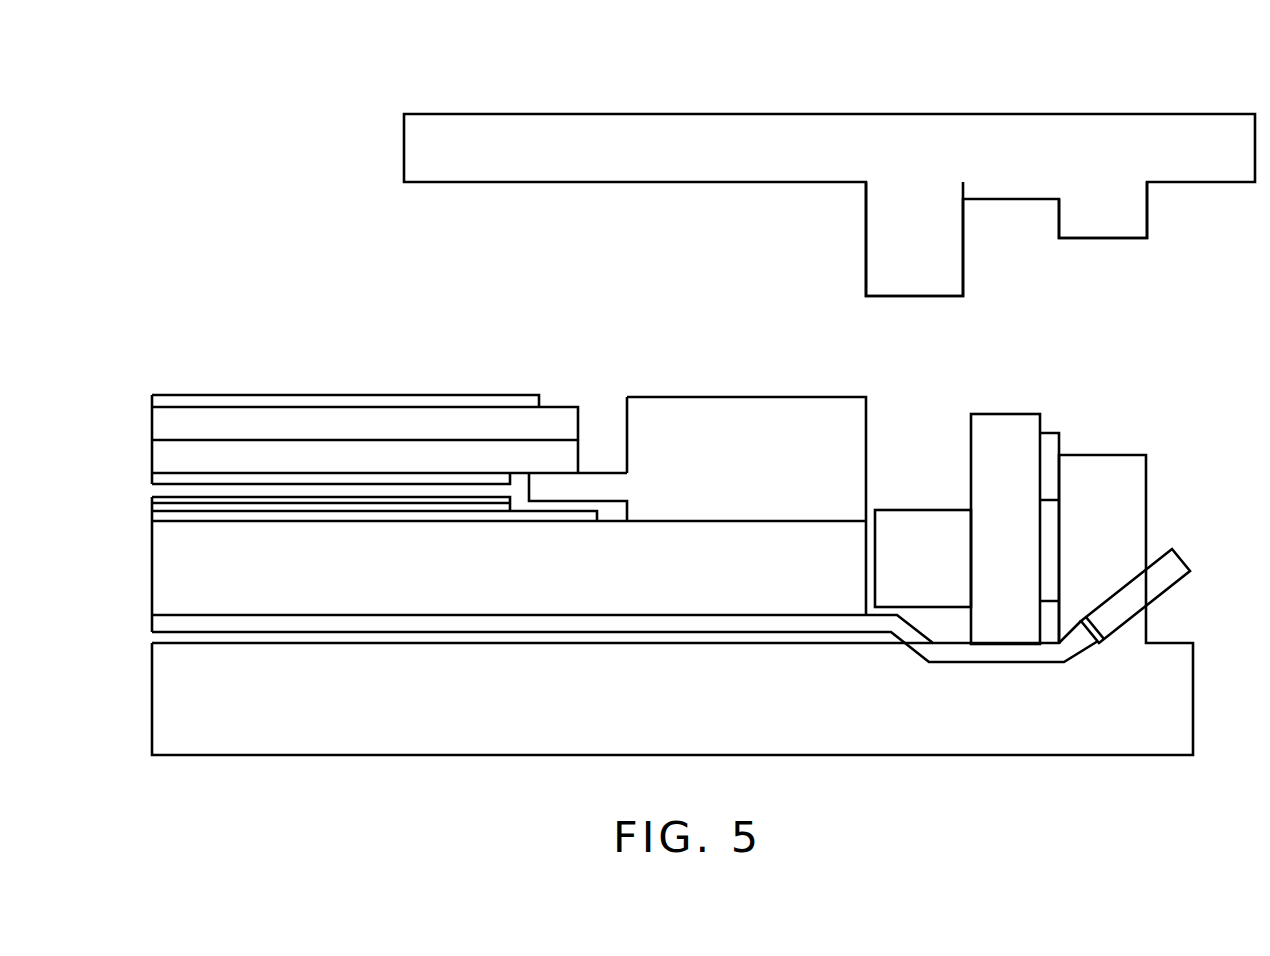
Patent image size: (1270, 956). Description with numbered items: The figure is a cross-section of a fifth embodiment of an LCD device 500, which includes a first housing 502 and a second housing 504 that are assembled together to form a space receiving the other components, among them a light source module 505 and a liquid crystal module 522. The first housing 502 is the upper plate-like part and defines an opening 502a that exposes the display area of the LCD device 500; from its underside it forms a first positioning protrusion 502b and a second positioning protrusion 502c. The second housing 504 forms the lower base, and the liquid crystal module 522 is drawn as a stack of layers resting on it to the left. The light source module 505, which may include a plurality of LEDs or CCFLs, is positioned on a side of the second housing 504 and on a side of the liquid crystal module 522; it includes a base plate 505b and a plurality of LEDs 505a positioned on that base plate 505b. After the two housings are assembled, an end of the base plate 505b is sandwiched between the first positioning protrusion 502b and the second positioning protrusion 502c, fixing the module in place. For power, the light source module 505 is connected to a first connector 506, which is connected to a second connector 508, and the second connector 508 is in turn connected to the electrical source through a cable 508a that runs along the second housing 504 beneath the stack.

The LCD device 500 is at (1136, 80).
The first housing 502 is at (830, 165).
The opening 502a is at (325, 165).
The first positioning protrusion 502b is at (882, 238).
The second positioning protrusion 502c is at (1147, 203).
The second housing 504 is at (412, 737).
The light source module 505 is at (957, 471).
The LEDs 505a is at (920, 518).
The base plate 505b is at (1003, 420).
The first connector 506 is at (1050, 505).
The second connector 508 is at (1168, 578).
The cable 508a is at (997, 653).
The liquid crystal module 522 is at (283, 377).